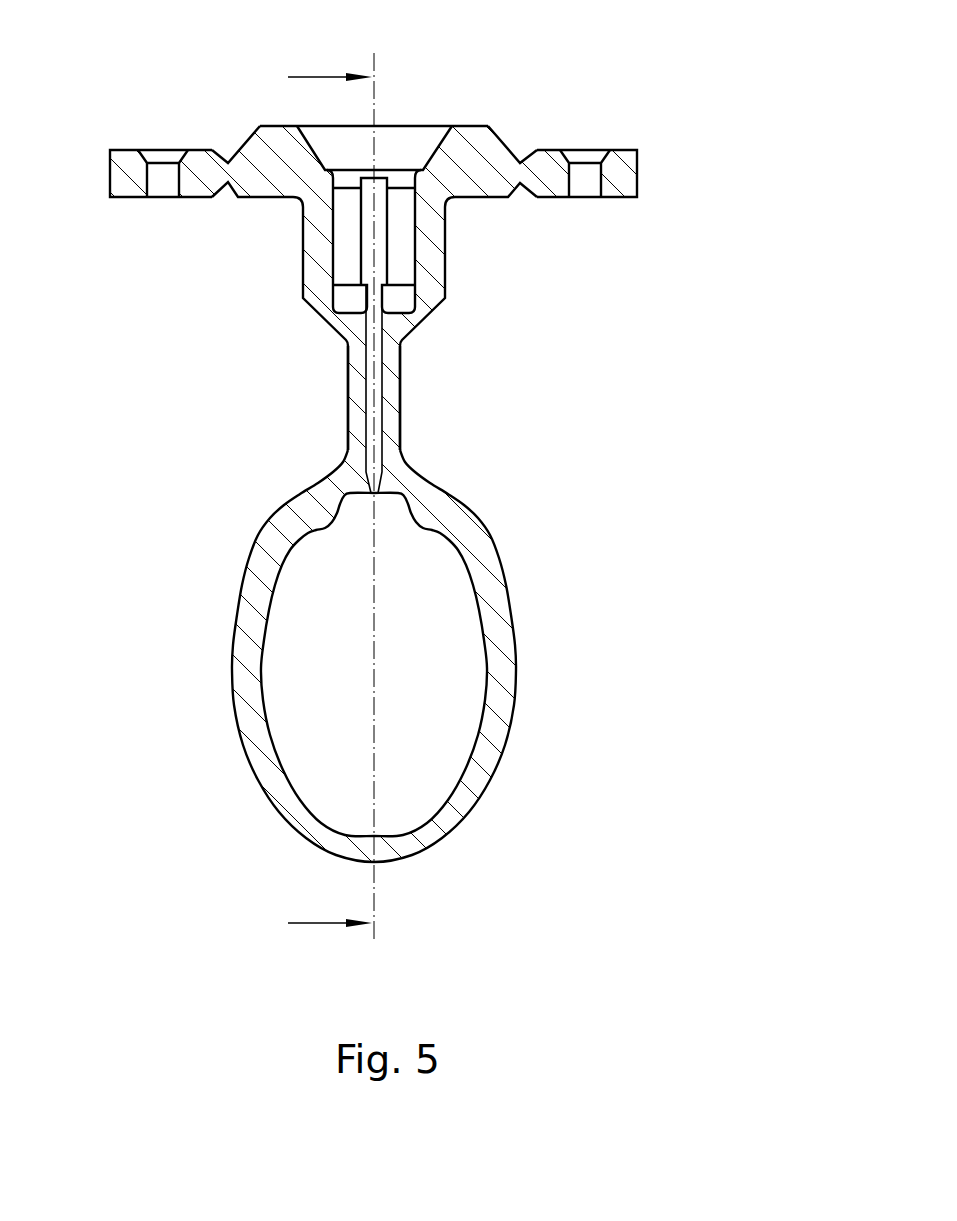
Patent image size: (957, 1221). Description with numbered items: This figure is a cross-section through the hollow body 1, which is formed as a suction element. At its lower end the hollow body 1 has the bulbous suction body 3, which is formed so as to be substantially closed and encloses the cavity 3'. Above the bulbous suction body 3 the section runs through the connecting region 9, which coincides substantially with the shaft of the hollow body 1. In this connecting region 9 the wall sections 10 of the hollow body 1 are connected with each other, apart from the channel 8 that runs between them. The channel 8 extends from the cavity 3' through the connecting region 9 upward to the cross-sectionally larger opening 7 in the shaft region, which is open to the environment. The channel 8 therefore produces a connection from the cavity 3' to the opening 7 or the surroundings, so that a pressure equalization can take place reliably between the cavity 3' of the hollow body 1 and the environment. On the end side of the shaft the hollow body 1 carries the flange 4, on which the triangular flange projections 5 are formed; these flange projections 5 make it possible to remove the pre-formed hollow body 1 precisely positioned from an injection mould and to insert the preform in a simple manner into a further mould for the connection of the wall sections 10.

The hollow body 1 is at (583, 786).
The bulbous suction body 3 is at (431, 656).
The cavity 3' is at (320, 665).
The flange 4 is at (470, 158).
The flange projections 5 is at (623, 177).
The opening 7 is at (440, 116).
The channel 8 is at (373, 412).
The connecting region 9 is at (320, 416).
The wall sections 10 is at (362, 393).